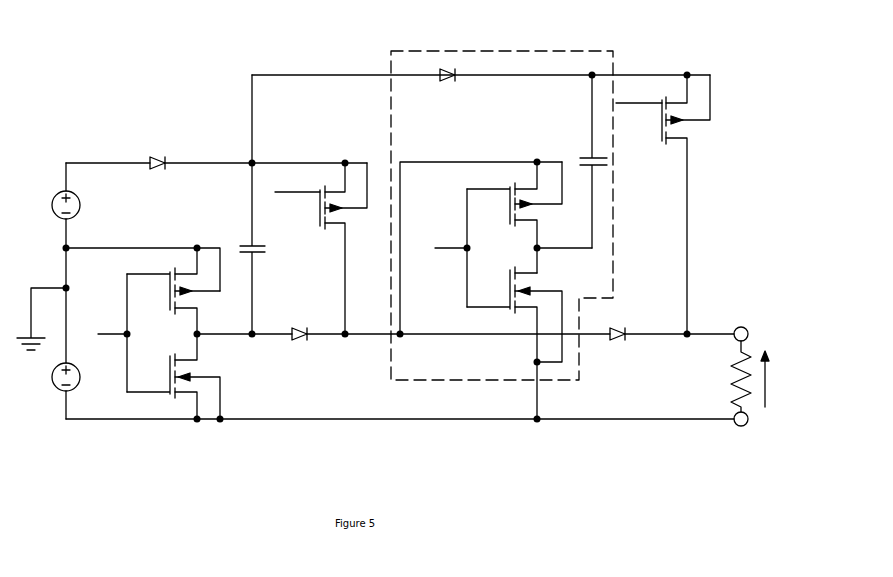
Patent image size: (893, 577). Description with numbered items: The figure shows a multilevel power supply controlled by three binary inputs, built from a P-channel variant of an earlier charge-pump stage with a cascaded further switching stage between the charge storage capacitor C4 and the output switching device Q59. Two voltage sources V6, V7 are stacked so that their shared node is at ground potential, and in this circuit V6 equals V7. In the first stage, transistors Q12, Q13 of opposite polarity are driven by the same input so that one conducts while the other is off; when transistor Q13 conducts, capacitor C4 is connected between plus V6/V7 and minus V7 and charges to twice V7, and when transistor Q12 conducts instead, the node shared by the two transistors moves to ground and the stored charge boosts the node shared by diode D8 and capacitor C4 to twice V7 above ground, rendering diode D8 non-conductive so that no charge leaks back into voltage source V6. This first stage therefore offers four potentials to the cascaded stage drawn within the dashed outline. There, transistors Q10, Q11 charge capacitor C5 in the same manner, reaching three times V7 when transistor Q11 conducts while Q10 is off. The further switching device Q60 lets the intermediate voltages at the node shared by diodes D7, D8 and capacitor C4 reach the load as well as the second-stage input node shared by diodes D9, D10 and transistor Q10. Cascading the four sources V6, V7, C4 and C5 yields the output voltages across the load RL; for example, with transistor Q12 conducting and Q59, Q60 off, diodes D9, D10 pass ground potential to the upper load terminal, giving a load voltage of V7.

The voltage source V6 is at (89, 205).
The voltage source V7 is at (58, 377).
The diode D8 is at (157, 169).
The capacitor C4 is at (247, 248).
The transistor Q12 is at (173, 291).
The transistor Q13 is at (173, 376).
The diode D9 is at (299, 341).
The further switching device Q60 is at (325, 248).
The diode D7 is at (447, 83).
The transistor Q10 is at (514, 217).
The transistor Q11 is at (514, 343).
The capacitor C5 is at (597, 161).
The output switching device Q59 is at (668, 204).
The diode D10 is at (609, 325).
The load RL is at (732, 376).